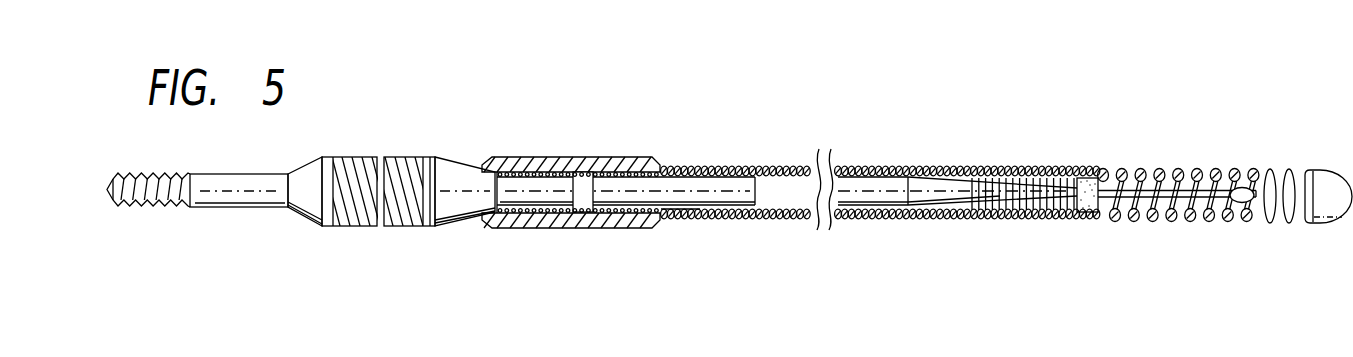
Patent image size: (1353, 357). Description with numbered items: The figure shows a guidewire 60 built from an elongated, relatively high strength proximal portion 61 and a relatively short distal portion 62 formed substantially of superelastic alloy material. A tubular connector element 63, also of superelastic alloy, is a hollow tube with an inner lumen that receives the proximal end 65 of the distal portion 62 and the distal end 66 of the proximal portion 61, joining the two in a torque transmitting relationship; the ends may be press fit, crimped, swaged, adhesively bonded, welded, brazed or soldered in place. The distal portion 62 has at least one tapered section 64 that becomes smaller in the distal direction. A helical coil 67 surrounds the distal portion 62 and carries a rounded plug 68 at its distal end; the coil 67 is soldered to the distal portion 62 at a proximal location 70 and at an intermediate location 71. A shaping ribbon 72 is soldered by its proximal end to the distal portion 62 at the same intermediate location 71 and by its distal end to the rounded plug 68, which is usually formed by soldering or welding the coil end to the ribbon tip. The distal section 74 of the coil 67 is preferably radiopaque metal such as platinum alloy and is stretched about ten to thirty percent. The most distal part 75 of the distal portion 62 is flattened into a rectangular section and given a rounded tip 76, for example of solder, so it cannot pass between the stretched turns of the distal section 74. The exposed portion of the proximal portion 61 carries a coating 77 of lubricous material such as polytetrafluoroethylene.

The guidewire 60 is at (954, 143).
The proximal portion 61 is at (408, 156).
The distal portion 62 is at (793, 200).
The tubular connector element 63 is at (538, 219).
The tapered section 64 is at (970, 200).
The proximal end of the distal portion 65 is at (615, 187).
The distal end of the proximal portion 66 is at (507, 187).
The helical coil 67 is at (1047, 167).
The rounded plug 68 is at (1325, 223).
The proximal location 70 is at (673, 220).
The intermediate location 71 is at (1100, 167).
The shaping ribbon 72 is at (1172, 178).
The distal section of the helical coil 74 is at (1133, 222).
The most distal part of the distal portion 75 is at (1207, 222).
The rounded tip 76 is at (1243, 188).
The coating 77 is at (347, 228).